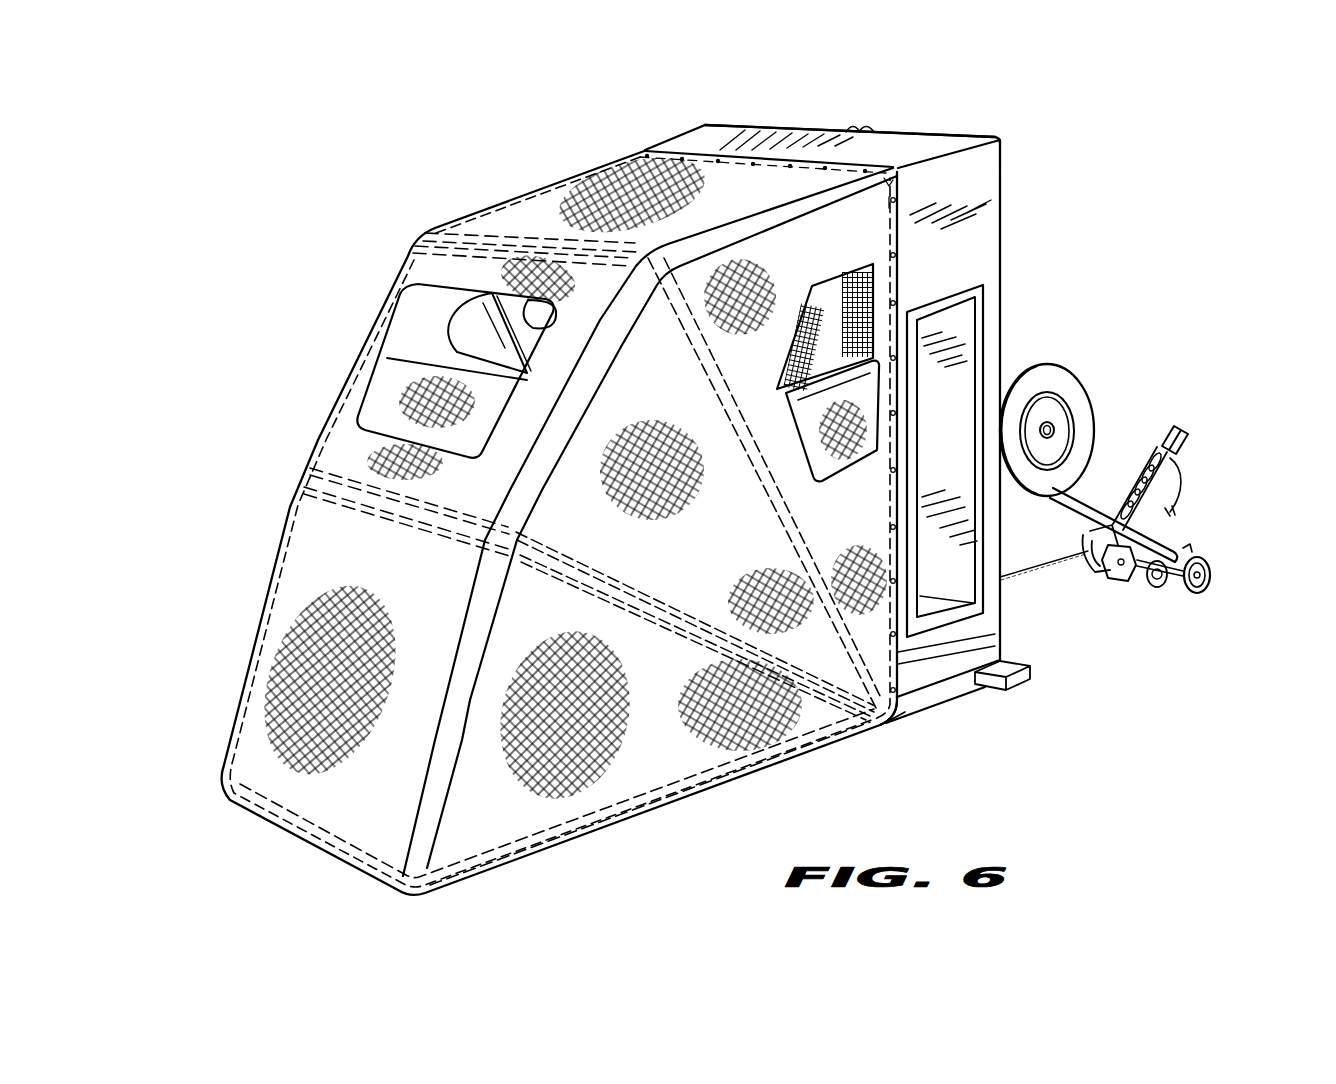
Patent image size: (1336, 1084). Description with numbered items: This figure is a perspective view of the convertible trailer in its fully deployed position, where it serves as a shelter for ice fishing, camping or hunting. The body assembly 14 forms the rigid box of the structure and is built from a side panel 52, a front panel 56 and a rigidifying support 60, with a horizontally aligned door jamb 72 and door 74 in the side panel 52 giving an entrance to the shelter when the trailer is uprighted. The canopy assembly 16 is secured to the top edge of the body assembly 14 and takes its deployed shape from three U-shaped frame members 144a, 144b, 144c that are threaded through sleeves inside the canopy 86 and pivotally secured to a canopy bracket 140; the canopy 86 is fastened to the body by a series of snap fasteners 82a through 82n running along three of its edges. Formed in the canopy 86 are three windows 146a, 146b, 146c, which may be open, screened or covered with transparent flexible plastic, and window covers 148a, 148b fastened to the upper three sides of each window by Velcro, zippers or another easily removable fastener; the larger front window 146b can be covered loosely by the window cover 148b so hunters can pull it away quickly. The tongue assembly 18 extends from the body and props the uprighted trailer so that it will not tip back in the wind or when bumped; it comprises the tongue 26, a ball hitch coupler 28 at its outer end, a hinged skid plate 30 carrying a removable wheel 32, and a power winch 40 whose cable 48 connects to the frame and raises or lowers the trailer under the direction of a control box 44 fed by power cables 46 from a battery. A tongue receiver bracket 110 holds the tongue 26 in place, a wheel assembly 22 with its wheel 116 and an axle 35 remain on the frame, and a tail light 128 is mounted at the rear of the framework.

The body assembly 14 is at (1016, 202).
The canopy assembly 16 is at (515, 194).
The tongue assembly 18 is at (1162, 527).
The wheel assembly 22 is at (1092, 394).
The tongue 26 is at (1067, 493).
The ball hitch coupler 28 is at (1190, 553).
The skid plate 30 is at (1166, 587).
The wheel 32 is at (1200, 593).
The axle 35 is at (1207, 577).
The power winch 40 is at (1120, 583).
The control box 44 is at (1188, 432).
The power cables 46 is at (1181, 477).
The cable 48 is at (1040, 562).
The side panel 52 is at (965, 247).
The front panel 56 is at (935, 152).
The rigidifying support 60 is at (962, 697).
The door jamb 72 is at (985, 298).
The door 74 is at (953, 362).
The snap fastener 82a is at (903, 702).
The snap fastener 82n is at (652, 152).
The canopy 86 is at (722, 560).
The tongue receiver bracket 110 is at (900, 123).
The wheel 116 is at (1090, 397).
The tail light 128 is at (1008, 688).
The canopy bracket 140 is at (869, 712).
The U-shaped frame member 144a is at (492, 872).
The U-shaped frame member 144b is at (318, 463).
The U-shaped frame member 144c is at (493, 237).
The window 146a is at (837, 307).
The front window 146b is at (496, 296).
The window 146c is at (540, 313).
The window cover 148a is at (857, 452).
The window cover 148b is at (453, 327).